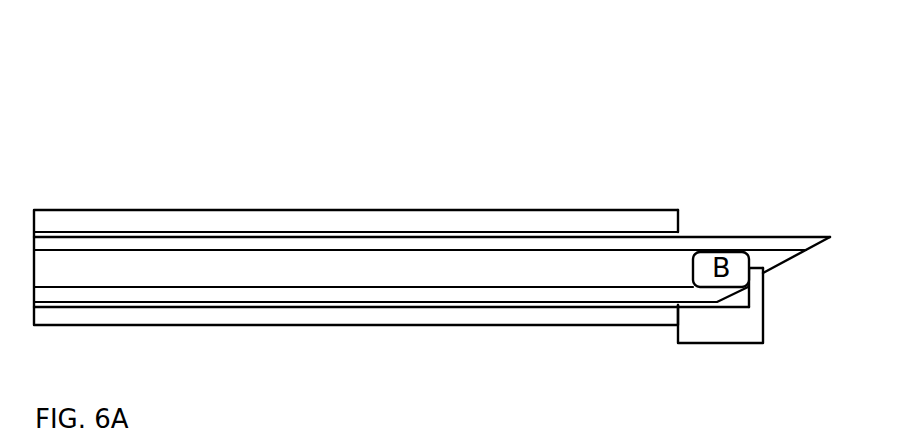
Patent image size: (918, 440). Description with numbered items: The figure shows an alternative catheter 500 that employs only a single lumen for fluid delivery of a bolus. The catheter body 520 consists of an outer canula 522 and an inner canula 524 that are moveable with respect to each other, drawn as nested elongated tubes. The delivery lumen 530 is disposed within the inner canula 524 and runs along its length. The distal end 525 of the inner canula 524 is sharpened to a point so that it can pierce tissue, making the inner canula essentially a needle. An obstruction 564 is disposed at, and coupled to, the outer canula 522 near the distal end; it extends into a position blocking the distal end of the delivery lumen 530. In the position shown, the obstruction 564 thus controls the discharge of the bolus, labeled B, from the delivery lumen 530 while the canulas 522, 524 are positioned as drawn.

The catheter 500 is at (388, 71).
The catheter body 520 is at (130, 210).
The outer canula 522 is at (205, 225).
The inner canula 524 is at (452, 235).
The distal end 525 is at (810, 233).
The delivery lumen 530 is at (508, 270).
The obstruction 564 is at (763, 290).